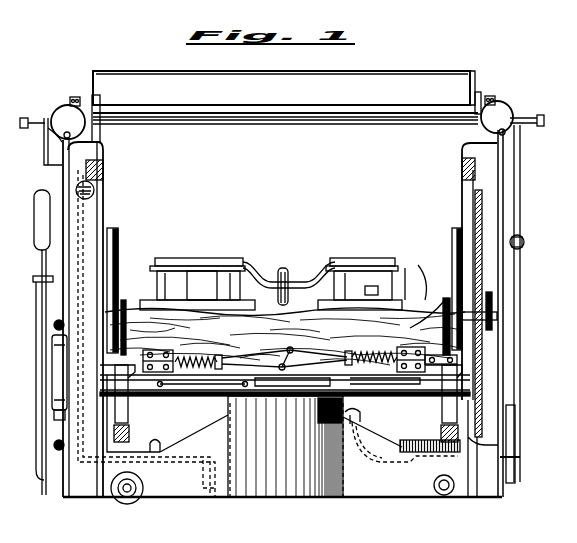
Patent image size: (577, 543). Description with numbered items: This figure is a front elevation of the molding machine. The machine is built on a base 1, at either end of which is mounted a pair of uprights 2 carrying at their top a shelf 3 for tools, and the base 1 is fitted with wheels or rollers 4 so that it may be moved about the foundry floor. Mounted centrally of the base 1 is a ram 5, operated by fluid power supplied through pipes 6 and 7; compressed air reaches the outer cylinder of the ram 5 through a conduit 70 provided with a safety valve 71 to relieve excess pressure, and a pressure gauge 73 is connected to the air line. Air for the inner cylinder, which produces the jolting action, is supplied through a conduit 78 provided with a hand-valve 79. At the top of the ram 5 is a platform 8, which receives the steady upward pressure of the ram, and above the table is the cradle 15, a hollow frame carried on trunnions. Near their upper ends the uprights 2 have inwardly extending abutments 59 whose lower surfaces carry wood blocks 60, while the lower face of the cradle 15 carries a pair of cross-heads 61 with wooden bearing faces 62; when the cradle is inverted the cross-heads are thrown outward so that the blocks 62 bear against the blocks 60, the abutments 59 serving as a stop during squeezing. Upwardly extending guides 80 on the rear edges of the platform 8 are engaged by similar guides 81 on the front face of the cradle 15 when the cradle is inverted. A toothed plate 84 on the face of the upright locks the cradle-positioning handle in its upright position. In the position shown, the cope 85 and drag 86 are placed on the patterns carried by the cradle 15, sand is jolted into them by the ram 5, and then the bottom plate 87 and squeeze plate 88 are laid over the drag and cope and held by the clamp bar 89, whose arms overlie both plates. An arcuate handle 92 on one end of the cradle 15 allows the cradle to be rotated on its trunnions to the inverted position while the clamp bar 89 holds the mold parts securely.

The base 1 is at (362, 485).
The uprights 2 is at (80, 488).
The shelf 3 is at (418, 104).
The wheels or rollers 4 is at (118, 502).
The ram 5 is at (278, 488).
The pipe 6 is at (522, 360).
The pipe 7 is at (42, 143).
The platform 8 is at (196, 396).
The cradle 15 is at (410, 328).
The abutments 59 is at (103, 152).
The wood blocks 60 is at (103, 172).
The cross-heads 61 is at (124, 412).
The bearing faces 62 is at (129, 440).
The conduit 70 is at (213, 497).
The safety valve 71 is at (157, 460).
The pressure gauge 73 is at (94, 192).
The conduit 78 is at (357, 414).
The hand-valve 79 is at (525, 242).
The guides 80 is at (118, 242).
The guides 81 is at (118, 336).
The toothed plate 84 is at (52, 303).
The cope 85 is at (413, 268).
The drag 86 is at (170, 272).
The bottom plate 87 is at (192, 272).
The squeeze plate 88 is at (383, 262).
The clamp bar 89 is at (262, 272).
The arcuate handle 92 is at (140, 397).